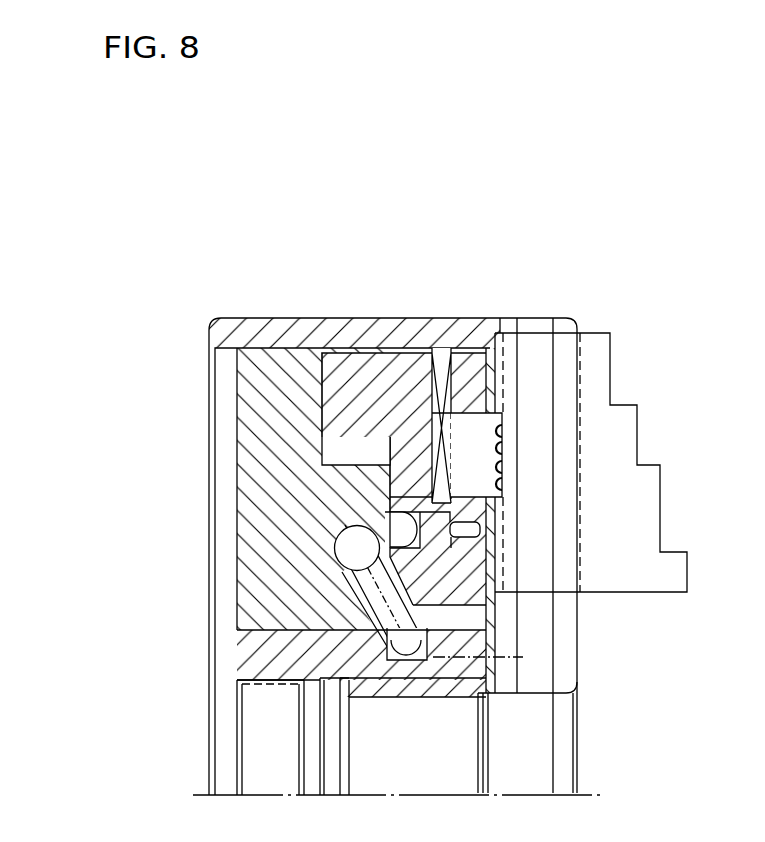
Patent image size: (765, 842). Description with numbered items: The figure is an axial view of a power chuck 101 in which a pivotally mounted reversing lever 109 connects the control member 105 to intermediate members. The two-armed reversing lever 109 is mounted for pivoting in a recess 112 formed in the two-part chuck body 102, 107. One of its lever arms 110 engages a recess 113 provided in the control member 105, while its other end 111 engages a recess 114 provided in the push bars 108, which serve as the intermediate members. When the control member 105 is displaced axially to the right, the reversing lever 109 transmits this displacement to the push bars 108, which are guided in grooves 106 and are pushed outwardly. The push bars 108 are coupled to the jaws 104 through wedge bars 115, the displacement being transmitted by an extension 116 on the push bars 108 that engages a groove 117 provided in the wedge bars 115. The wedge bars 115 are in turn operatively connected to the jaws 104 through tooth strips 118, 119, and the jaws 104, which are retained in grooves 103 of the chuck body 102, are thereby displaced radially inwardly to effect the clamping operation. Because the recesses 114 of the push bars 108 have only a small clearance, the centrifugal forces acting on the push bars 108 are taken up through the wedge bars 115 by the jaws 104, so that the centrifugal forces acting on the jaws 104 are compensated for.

The clamping device 101 is at (155, 554).
The chuck body 102 is at (340, 320).
The grooves 103 is at (492, 323).
The jaws 104 is at (600, 352).
The control member 105 is at (253, 652).
The grooves 106 is at (323, 393).
The chuck body 107 is at (232, 406).
The push bars 108 is at (357, 440).
The reversing lever 109 is at (260, 685).
The lever arm 110 is at (345, 600).
The other end 111 is at (345, 528).
The recess 112 is at (333, 555).
The recess 113 is at (390, 640).
The recess 114 is at (410, 508).
The wedge bars 115 is at (472, 448).
The extension 116 is at (447, 376).
The groove 117 is at (447, 437).
The tooth strip 118 is at (490, 480).
The tooth strip 119 is at (507, 490).